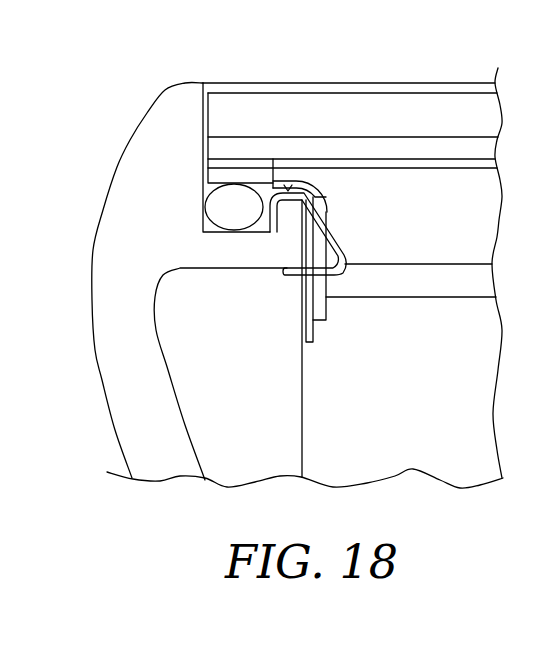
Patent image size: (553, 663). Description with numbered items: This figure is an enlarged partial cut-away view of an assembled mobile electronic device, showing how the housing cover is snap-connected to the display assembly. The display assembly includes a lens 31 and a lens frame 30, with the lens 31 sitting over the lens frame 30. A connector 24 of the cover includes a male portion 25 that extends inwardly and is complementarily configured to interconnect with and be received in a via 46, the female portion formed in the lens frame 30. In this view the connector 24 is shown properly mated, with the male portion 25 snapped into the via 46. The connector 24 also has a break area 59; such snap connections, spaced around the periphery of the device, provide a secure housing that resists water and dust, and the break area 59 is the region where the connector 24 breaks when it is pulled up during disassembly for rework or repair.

The lens 31 is at (351, 108).
The lens frame 30 is at (298, 177).
The connector 24 is at (270, 215).
The via 46 is at (326, 199).
The break area 59 is at (288, 186).
The male portion 25 is at (337, 247).